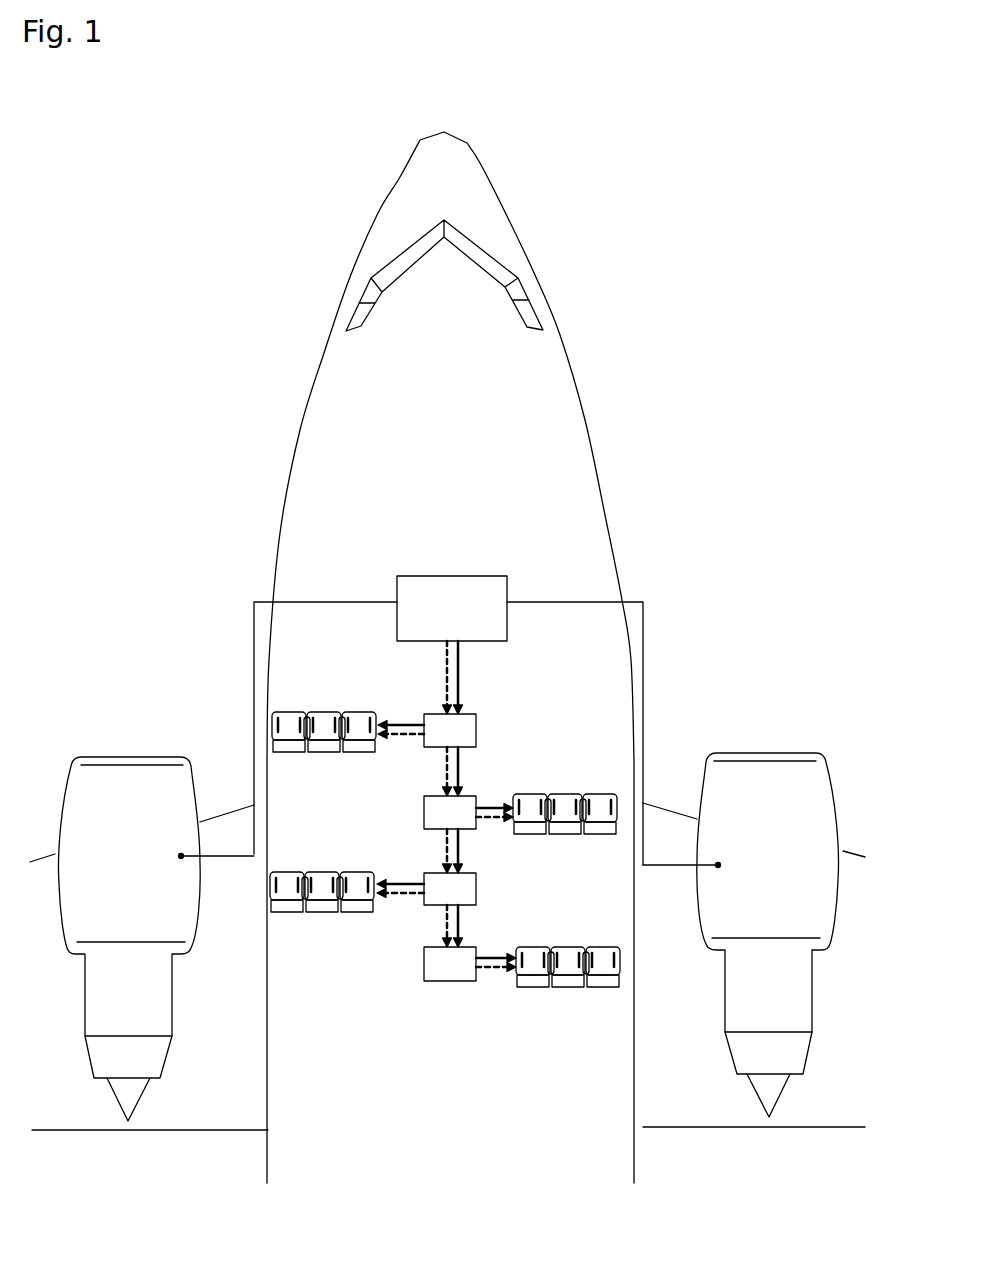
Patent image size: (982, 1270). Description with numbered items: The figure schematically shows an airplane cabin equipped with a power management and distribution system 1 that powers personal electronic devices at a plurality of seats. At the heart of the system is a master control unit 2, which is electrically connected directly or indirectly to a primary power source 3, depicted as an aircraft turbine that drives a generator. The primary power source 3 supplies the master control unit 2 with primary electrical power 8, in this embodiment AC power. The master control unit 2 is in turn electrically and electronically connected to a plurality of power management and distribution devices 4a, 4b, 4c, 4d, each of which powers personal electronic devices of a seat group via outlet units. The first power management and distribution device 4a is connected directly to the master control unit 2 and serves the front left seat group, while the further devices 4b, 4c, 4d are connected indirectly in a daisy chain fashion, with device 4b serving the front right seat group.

The power management and distribution system 1 is at (712, 401).
The master control unit 2 is at (452, 608).
The primary power source 3 is at (780, 738).
The first power management and distribution device 4a is at (374, 732).
The power management and distribution device 4b is at (520, 814).
The power management and distribution device 4c is at (373, 892).
The power management and distribution device 4d is at (522, 967).
The primary electrical power 8 is at (643, 637).